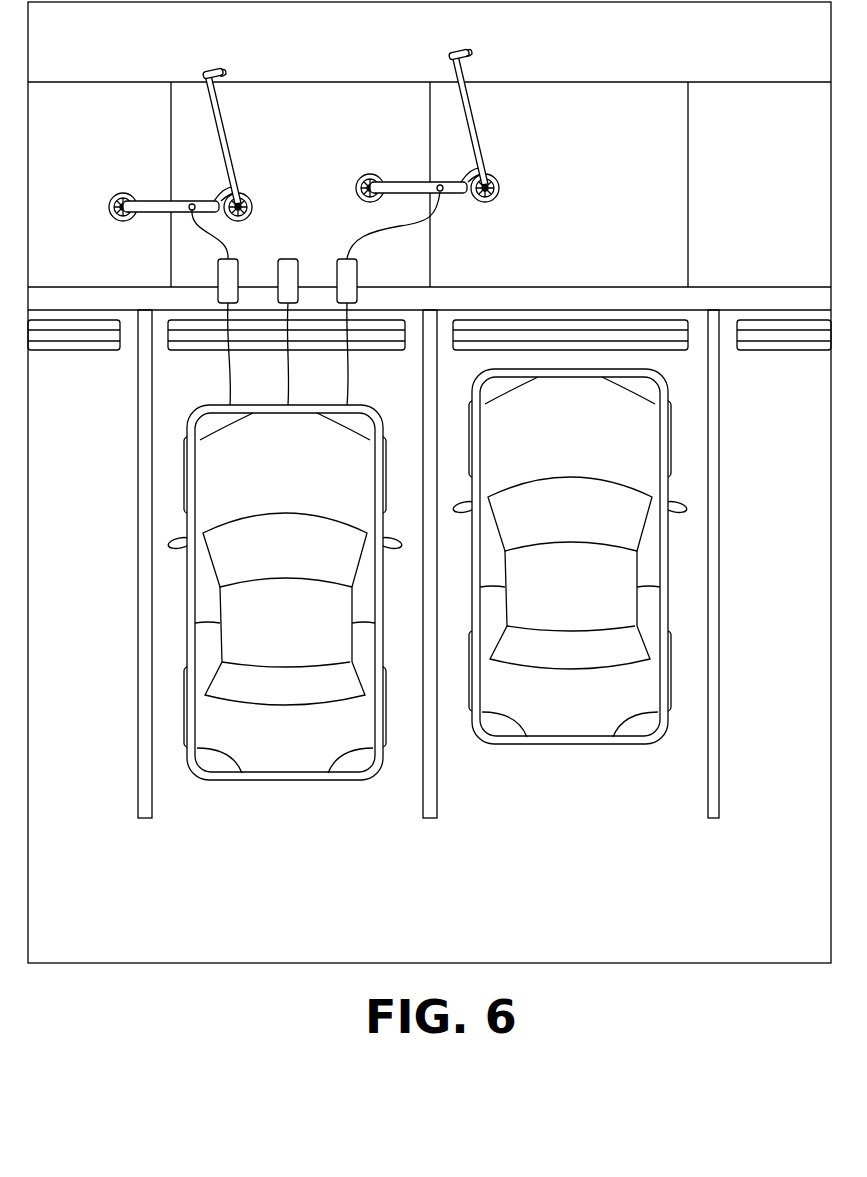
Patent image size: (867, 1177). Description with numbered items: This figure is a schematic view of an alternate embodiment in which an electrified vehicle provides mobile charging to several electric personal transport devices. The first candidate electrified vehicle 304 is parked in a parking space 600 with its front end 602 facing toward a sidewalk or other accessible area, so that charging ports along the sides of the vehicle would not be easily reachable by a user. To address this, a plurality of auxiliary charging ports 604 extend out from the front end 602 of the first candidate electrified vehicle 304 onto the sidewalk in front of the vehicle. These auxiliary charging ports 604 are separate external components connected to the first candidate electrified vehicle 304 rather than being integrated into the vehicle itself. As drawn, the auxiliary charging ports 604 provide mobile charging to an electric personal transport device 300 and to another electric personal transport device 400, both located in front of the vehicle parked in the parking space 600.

The electric personal transport device 300 is at (227, 131).
The another electric personal transport device 400 is at (470, 110).
The first candidate electrified vehicle 304 is at (313, 493).
The parking space 600 is at (393, 390).
The front end 602 is at (213, 408).
The plurality of auxiliary charging ports 604 is at (210, 276).